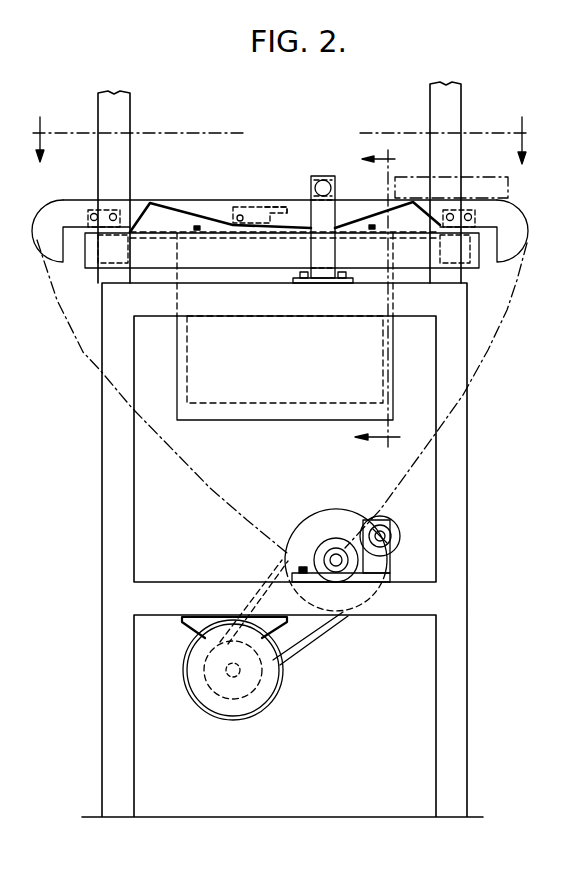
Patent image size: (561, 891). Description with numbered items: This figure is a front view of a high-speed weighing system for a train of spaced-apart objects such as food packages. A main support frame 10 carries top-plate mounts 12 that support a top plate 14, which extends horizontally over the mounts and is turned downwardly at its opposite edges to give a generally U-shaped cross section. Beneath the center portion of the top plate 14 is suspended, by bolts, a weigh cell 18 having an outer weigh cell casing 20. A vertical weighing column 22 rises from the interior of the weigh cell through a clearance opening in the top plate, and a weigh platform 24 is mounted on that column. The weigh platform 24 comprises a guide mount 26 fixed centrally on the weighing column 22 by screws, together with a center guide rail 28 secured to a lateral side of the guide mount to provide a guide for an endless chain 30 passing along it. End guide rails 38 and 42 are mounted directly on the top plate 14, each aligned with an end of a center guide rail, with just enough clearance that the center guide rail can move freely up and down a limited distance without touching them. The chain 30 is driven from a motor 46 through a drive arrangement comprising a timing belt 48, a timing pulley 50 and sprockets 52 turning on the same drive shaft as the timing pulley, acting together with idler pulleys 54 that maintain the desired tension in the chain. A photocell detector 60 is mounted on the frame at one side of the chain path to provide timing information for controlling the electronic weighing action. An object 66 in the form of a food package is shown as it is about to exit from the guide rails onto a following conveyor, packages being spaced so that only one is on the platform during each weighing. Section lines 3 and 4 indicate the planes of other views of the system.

The section line 3- 3 is at (281, 128).
The section line 4- 4 is at (388, 306).
The main support frame 10 is at (108, 478).
The top-plate mount 12 is at (100, 265).
The top plate 14 is at (165, 232).
The weigh cell 18 is at (187, 347).
The weigh cell casing 20 is at (288, 418).
The weighing column 22 is at (281, 207).
The weigh platform 24 is at (207, 200).
The guide mount 26 is at (247, 207).
The center guide rail 28 is at (347, 213).
The chain 30 is at (83, 350).
The end guide rail 38 is at (513, 215).
The end guide rail 42 is at (68, 200).
The motor 46 is at (213, 703).
The timing belt 48 is at (303, 642).
The timing pulley 50 is at (303, 527).
The sprockets 52 is at (337, 533).
The idler pulleys 54 is at (386, 532).
The photocell detector 60 is at (323, 180).
The object 66 is at (467, 177).